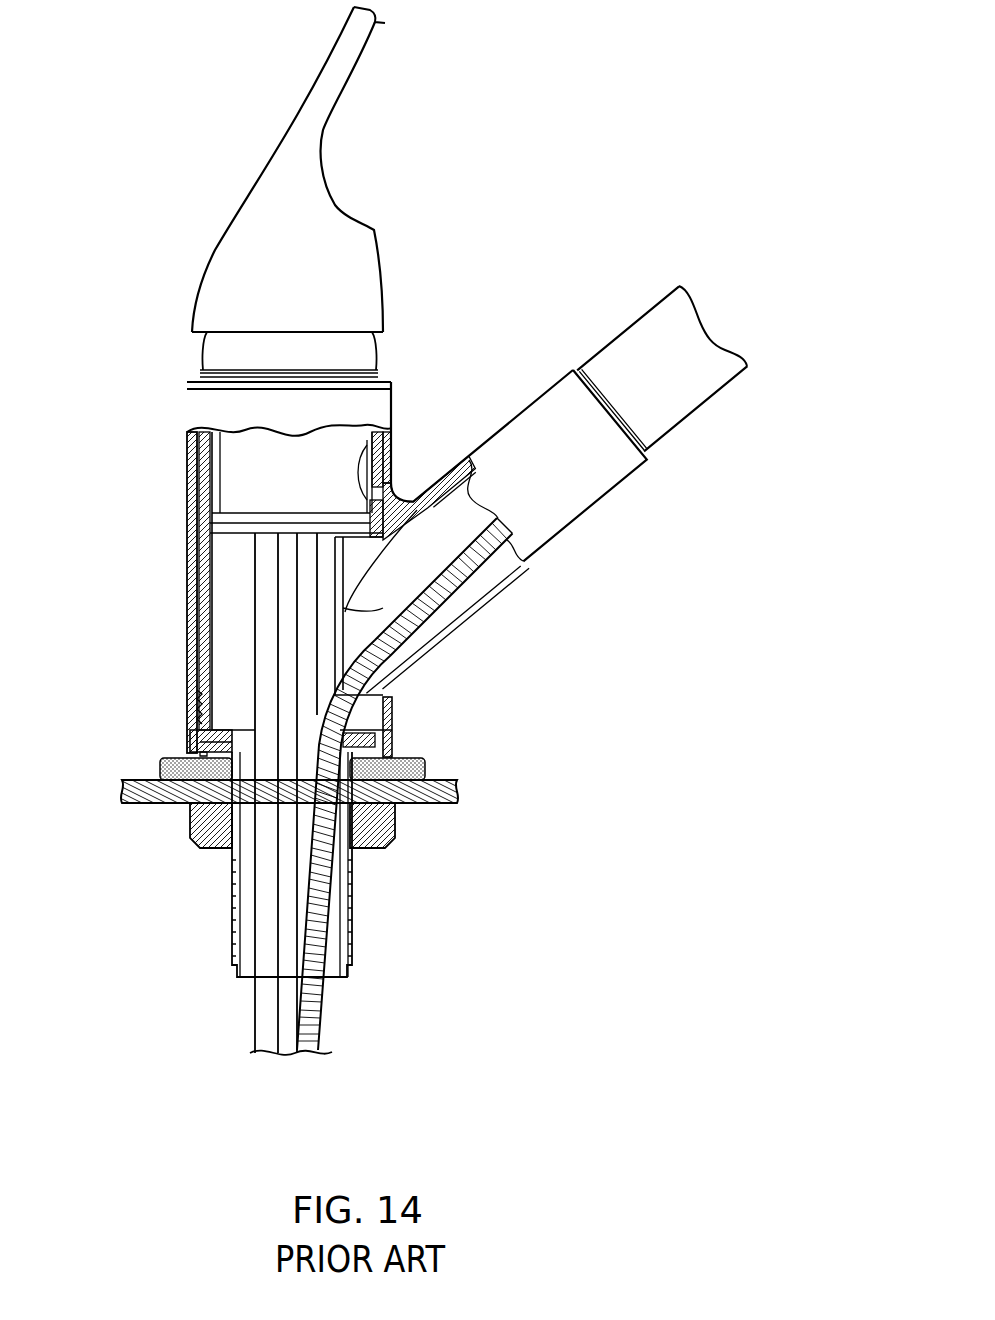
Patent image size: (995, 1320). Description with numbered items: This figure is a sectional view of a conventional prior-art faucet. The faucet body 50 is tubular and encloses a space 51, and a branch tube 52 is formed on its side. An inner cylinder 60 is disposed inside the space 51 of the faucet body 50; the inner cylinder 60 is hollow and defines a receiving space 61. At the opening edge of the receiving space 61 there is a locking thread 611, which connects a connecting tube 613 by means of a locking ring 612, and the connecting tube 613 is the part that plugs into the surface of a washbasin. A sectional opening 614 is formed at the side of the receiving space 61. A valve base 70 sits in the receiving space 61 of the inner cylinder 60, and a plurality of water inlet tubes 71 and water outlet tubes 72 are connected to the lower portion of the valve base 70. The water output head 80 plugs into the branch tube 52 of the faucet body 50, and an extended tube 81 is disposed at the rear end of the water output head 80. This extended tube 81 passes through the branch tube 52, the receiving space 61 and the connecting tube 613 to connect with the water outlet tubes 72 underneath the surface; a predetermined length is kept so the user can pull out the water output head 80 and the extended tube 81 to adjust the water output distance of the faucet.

The faucet body 50 is at (188, 615).
The space 51 is at (193, 647).
The branch tube 52 is at (523, 577).
The inner cylinder 60 is at (207, 547).
The receiving space 61 is at (233, 683).
The locking thread 611 is at (190, 718).
The locking ring 612 is at (392, 718).
The connecting tube 613 is at (352, 885).
The sectional opening 614 is at (398, 612).
The valve base 70 is at (223, 473).
The water inlet tubes 71 is at (287, 958).
The water outlet tubes 72 is at (267, 892).
The water output head 80 is at (673, 412).
The extended tube 81 is at (457, 580).